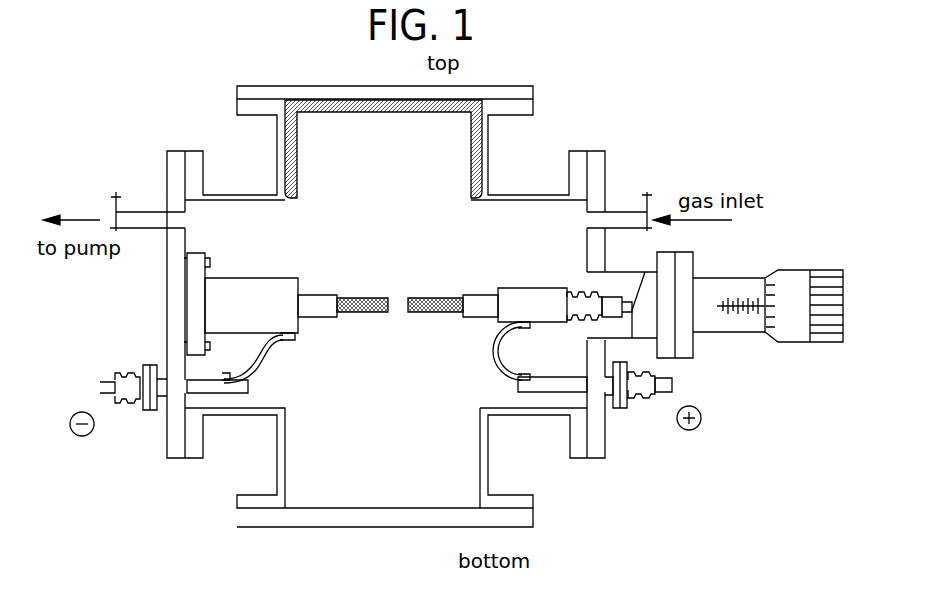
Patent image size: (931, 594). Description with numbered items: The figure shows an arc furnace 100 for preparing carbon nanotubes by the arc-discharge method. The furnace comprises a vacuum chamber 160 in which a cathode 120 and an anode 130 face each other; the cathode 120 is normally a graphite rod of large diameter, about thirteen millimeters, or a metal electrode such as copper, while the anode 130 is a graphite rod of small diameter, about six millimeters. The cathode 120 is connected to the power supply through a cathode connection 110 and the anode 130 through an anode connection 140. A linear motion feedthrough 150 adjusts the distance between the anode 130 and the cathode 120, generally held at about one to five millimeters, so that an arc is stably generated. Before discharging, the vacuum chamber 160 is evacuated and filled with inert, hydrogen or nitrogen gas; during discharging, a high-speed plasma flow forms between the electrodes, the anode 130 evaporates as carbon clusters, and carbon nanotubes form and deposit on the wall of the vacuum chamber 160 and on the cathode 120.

The arc furnace 100 is at (832, 100).
The cathode connection 110 is at (130, 400).
The cathode 120 is at (312, 320).
The anode 130 is at (422, 318).
The anode connection 140 is at (700, 422).
The linear motion feedthrough 150 is at (822, 342).
The vacuum chamber 160 is at (447, 166).